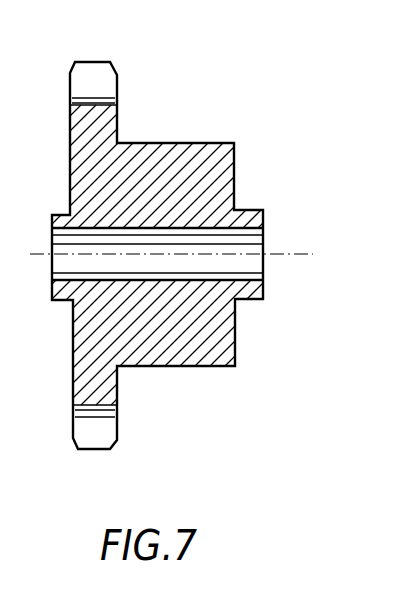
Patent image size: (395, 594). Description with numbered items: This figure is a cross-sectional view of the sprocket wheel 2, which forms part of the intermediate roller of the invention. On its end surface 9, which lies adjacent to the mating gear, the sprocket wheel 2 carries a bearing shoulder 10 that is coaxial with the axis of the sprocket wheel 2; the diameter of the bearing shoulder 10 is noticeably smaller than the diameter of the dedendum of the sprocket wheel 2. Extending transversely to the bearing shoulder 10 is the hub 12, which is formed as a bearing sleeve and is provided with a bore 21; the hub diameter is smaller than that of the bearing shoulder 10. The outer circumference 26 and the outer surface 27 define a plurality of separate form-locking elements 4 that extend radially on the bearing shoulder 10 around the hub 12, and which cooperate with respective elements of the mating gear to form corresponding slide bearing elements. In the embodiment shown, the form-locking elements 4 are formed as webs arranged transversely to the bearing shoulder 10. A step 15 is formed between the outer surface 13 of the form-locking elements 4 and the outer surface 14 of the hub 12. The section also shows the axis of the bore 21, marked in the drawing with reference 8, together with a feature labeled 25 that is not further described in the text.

The sprocket wheel 2 is at (224, 84).
The form-locking elements 4 is at (183, 152).
The shaft axis 8 is at (297, 252).
The end surface 9 is at (119, 120).
The bearing shoulder 10 is at (122, 368).
The hub 12 is at (265, 226).
The outer surface of the form-locking elements 13 is at (236, 151).
The outer surface of the hub 14 is at (264, 224).
The step 15 is at (236, 206).
The bore 21 is at (265, 265).
The flange 25 is at (65, 214).
The outer circumference 26 is at (139, 143).
The outer surface 27 is at (219, 368).